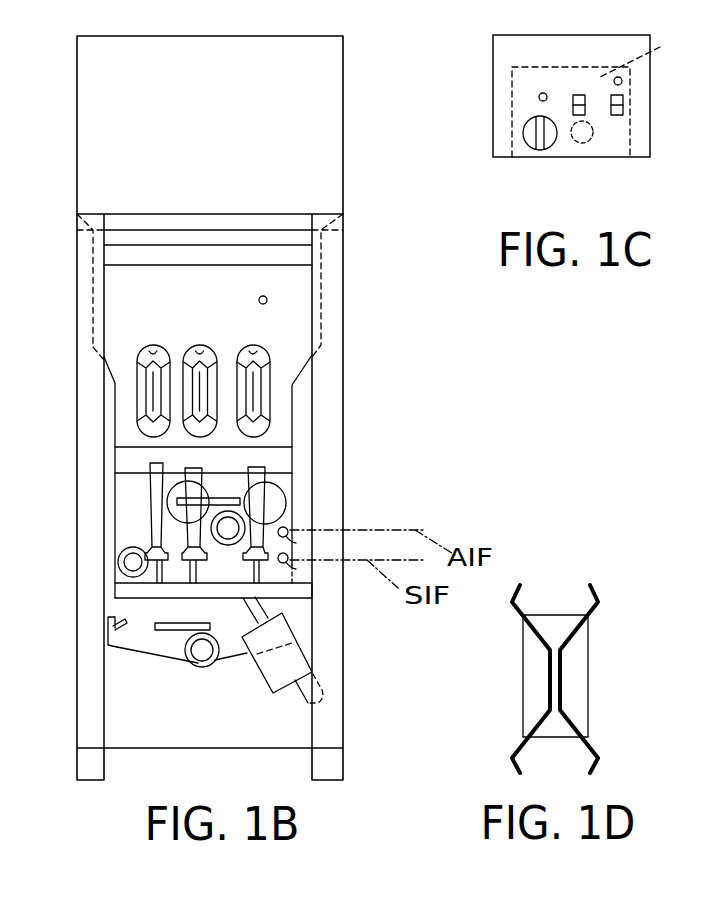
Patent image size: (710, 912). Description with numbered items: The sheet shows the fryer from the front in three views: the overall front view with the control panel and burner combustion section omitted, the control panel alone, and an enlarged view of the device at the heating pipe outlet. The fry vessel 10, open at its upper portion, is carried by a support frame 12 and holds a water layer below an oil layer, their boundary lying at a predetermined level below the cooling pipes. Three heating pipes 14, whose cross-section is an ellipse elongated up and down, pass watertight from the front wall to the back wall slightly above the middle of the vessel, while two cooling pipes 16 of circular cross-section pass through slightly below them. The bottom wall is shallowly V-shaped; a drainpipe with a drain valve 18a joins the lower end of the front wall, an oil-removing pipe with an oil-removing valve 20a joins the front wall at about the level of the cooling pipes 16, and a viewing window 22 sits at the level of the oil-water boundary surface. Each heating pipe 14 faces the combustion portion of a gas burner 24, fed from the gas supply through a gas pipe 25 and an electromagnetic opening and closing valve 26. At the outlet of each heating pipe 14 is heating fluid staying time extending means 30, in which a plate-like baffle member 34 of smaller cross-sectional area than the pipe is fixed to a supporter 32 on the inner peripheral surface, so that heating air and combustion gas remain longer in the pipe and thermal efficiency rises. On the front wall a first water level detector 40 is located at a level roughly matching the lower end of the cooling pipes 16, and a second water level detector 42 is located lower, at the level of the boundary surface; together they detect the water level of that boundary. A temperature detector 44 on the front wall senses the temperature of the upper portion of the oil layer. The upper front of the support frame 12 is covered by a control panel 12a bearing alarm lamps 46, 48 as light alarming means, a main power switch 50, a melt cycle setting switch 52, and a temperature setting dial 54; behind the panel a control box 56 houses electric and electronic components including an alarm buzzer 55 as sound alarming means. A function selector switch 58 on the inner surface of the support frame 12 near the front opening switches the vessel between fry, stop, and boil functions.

In FIG. 1B, the fry vessel 10 is at (296, 421).
In FIG. 1B, the support frame 12 is at (347, 293).
In FIG. 1D, the support frame 12 is at (692, 700).
In FIG. 1C, the control panel 12a is at (640, 113).
In FIG. 1B, the heating pipes 14 is at (250, 348).
In FIG. 1B, the cooling pipes 16 is at (280, 497).
In FIG. 1B, the drain valve 18a is at (202, 652).
In FIG. 1B, the oil-removing valve 20a is at (228, 528).
In FIG. 1B, the viewing window 22 is at (123, 555).
In FIG. 1B, the gas burner 24 is at (155, 483).
In FIG. 1B, the gas pipe 25 is at (147, 598).
In FIG. 1B, the electromagnetic opening and closing valve 26 is at (280, 678).
In FIG. 1B, the heating fluid staying time extending means 30 is at (191, 397).
In FIG. 1D, the heating fluid staying time extending means 30 is at (549, 679).
In FIG. 1D, the supporter 32 is at (600, 620).
In FIG. 1D, the baffle member 34 is at (575, 683).
In FIG. 1B, the first water level detector 40 is at (293, 546).
In FIG. 1B, the second water level detector 42 is at (290, 572).
In FIG. 1B, the temperature detector 44 is at (267, 299).
In FIG. 1C, the alarm lamp 46 is at (539, 95).
In FIG. 1C, the alarm lamp 48 is at (622, 81).
In FIG. 1C, the main power switch 50 is at (619, 117).
In FIG. 1C, the melt cycle setting switch 52 is at (572, 97).
In FIG. 1C, the temperature setting dial 54 is at (532, 138).
In FIG. 1C, the alarm buzzer 55 is at (582, 143).
In FIG. 1C, the control box 56 is at (650, 57).
In FIG. 1B, the function selector switch 58 is at (110, 638).